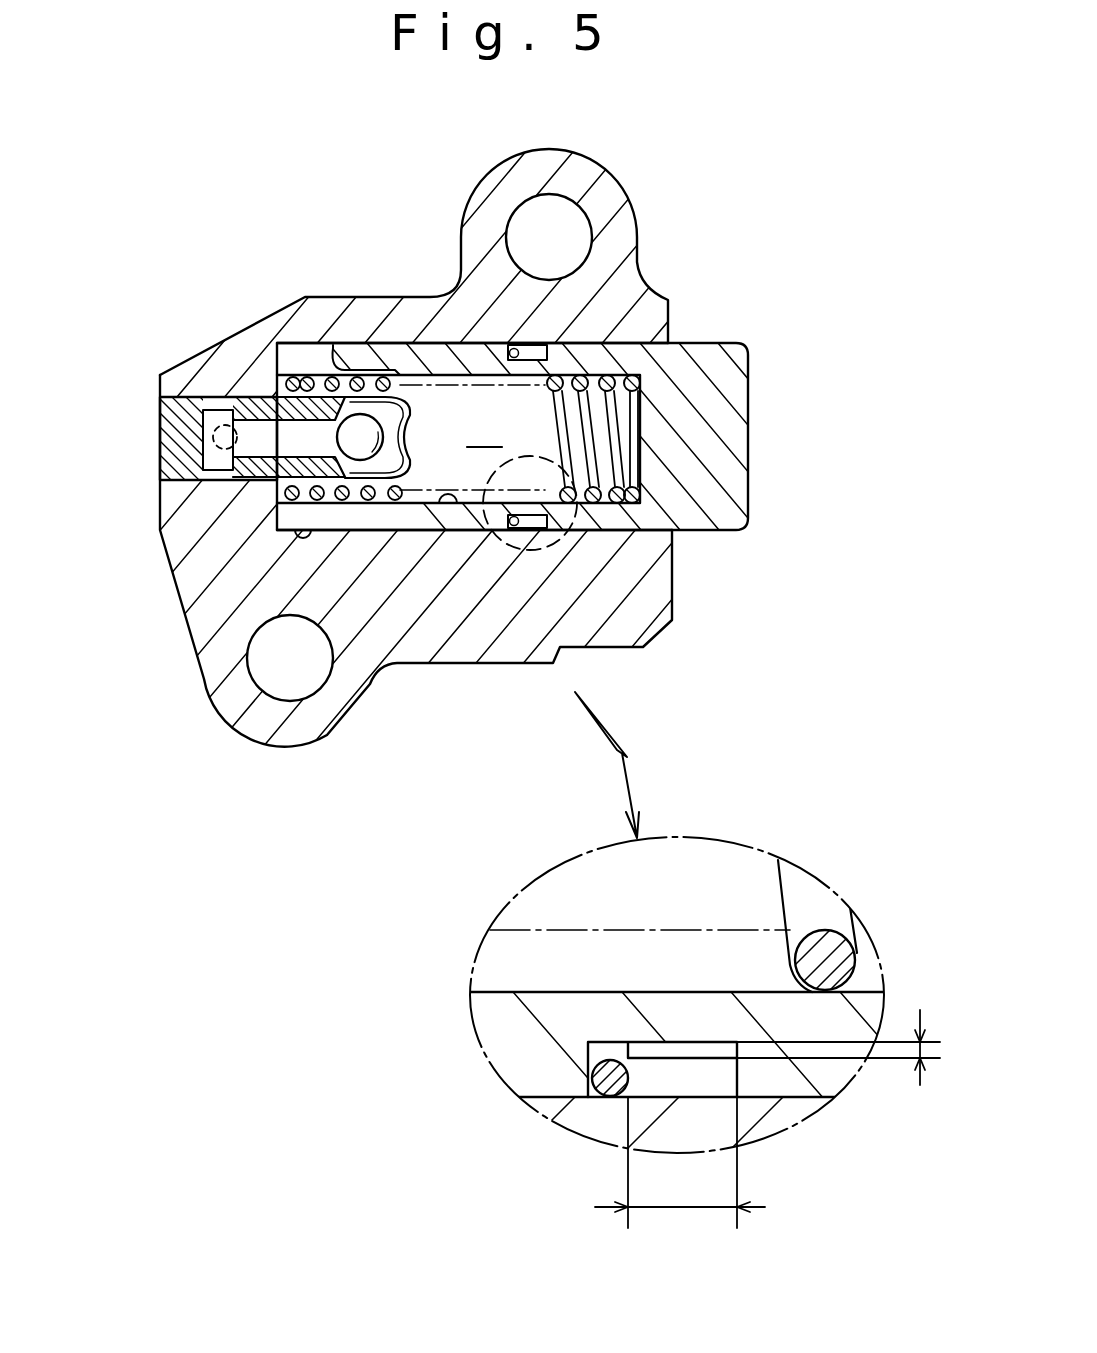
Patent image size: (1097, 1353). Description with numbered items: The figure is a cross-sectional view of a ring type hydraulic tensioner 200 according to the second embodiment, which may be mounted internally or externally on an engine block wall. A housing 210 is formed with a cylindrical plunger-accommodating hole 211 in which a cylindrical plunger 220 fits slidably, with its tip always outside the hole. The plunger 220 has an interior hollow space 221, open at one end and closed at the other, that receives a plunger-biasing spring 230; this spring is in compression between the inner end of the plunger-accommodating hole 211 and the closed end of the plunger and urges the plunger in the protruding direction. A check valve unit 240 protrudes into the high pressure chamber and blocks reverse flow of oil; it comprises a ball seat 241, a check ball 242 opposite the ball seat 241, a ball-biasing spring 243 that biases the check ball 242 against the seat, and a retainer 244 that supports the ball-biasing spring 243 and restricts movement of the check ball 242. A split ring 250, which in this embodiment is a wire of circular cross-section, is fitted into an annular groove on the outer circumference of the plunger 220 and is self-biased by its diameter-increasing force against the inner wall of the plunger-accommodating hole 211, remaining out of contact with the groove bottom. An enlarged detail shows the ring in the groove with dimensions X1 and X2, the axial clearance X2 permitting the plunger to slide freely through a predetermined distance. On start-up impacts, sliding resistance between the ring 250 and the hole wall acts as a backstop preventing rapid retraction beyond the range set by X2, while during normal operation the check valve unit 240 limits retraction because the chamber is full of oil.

The tensioner 200 is at (677, 187).
The housing 210 is at (623, 270).
The plunger-accommodating hole 211 is at (288, 530).
The plunger 220 is at (740, 422).
The interior hollow space 221 is at (457, 497).
The plunger-biasing spring 230 is at (635, 342).
The check valve unit 240 is at (405, 230).
The ball seat 241 is at (272, 398).
The check ball 242 is at (278, 408).
The ball-biasing spring 243 is at (345, 386).
The retainer 244 is at (400, 415).
The split ring 250 is at (510, 530).
The groove depth dimension X1 is at (844, 1065).
The axial clearance X2 is at (706, 1162).